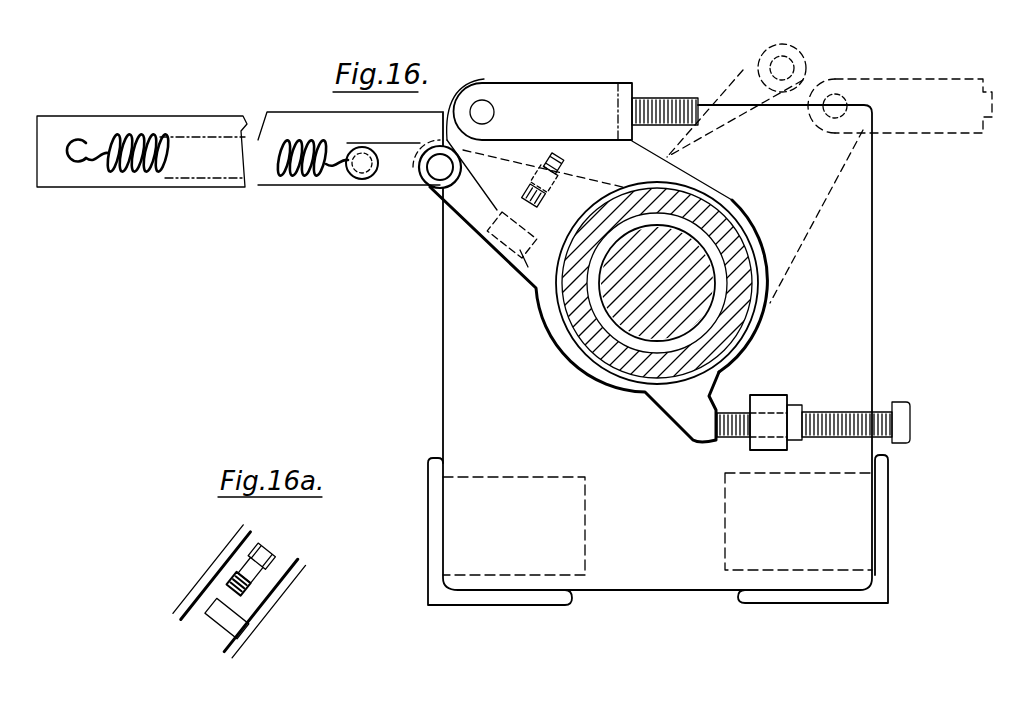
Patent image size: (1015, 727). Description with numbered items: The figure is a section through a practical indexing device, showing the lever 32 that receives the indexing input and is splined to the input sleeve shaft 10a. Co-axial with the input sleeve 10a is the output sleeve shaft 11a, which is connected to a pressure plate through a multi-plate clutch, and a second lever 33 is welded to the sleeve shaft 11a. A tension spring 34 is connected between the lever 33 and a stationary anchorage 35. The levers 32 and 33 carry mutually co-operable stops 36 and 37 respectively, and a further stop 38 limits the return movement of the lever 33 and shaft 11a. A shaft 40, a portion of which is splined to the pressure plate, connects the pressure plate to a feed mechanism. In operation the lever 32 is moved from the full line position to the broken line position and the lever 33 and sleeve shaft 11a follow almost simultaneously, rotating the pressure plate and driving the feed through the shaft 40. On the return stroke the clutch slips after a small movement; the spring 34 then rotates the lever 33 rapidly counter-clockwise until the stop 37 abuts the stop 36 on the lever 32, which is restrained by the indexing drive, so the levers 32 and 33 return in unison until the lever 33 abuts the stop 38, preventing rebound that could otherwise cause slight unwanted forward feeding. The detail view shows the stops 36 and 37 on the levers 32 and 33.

The input sleeve shaft 10a is at (583, 347).
The output sleeve shaft 11a is at (628, 353).
The lever 32 is at (585, 163).
The second lever 33 is at (467, 187).
The tension spring 34 is at (190, 163).
The stationary anchorage 35 is at (73, 149).
The stop 36 is at (527, 276).
The stop 37 is at (520, 200).
The stop 38 is at (742, 413).
The shaft 40 is at (665, 330).